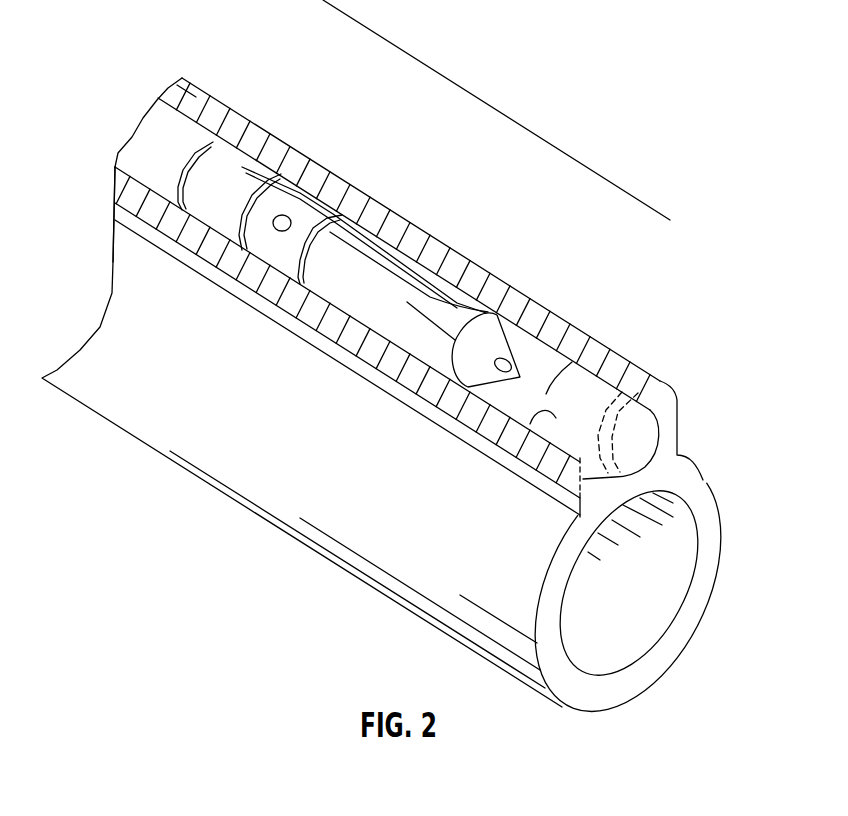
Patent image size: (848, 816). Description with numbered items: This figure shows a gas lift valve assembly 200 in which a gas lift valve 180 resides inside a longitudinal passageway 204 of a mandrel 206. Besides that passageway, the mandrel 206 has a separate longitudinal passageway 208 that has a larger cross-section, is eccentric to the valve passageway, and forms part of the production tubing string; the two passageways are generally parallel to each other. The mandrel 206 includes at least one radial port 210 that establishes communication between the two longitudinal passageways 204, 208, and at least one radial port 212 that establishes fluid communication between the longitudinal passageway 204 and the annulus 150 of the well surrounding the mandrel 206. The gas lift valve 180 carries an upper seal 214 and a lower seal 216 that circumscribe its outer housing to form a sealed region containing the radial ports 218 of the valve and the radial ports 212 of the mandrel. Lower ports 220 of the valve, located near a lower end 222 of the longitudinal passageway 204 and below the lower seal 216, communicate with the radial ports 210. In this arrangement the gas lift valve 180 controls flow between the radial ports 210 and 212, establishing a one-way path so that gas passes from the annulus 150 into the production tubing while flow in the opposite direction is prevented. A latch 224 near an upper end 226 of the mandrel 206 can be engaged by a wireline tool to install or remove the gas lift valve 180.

The annulus 150 is at (493, 170).
The gas lift valve 180 is at (377, 273).
The gas lift valve assembly 200 is at (513, 215).
The longitudinal passageway 204 is at (630, 455).
The mandrel 206 is at (463, 247).
The longitudinal passageway 208 is at (638, 634).
The radial port 210 is at (585, 336).
The radial port 212 is at (340, 176).
The upper seal 214 is at (284, 165).
The lower seal 216 is at (345, 186).
The radial ports 218 is at (277, 232).
The lower ports 220 is at (512, 373).
The lower end 222 is at (677, 397).
The latch 224 is at (172, 128).
The upper end 226 is at (120, 128).